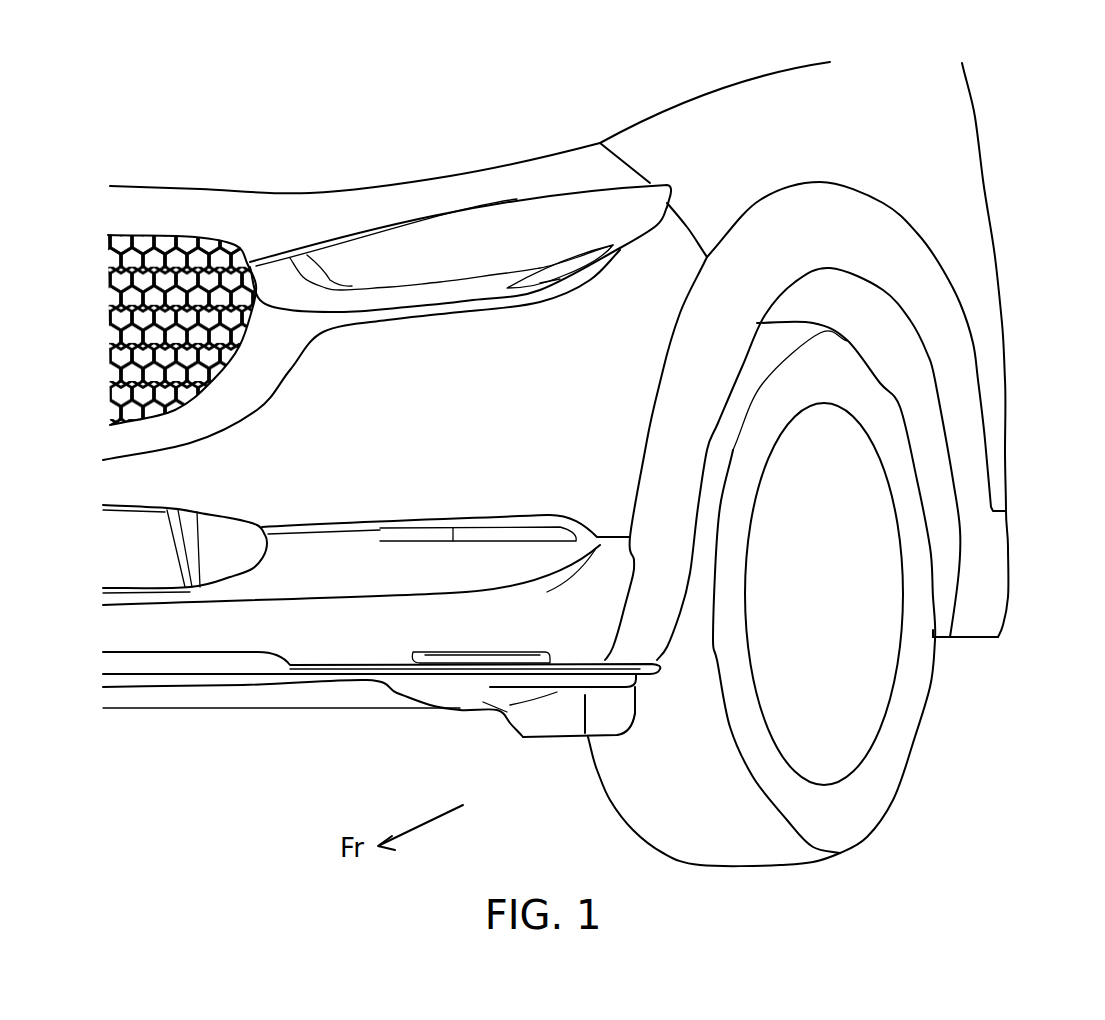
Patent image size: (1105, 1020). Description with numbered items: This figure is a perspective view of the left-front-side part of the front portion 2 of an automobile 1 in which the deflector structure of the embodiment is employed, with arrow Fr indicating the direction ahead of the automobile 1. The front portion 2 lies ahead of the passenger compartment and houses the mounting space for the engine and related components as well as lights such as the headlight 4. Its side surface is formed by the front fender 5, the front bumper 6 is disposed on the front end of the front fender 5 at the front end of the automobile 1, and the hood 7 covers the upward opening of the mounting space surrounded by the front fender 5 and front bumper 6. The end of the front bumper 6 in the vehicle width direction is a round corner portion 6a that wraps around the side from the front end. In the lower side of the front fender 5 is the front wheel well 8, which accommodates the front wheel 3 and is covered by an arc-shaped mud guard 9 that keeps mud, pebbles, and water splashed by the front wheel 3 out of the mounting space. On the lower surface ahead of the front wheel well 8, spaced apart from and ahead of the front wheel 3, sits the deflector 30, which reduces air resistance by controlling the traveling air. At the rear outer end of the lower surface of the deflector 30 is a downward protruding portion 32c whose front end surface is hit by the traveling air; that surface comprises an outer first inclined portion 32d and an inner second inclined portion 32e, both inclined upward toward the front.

The automobile 1 is at (140, 131).
The front portion 2 is at (898, 80).
The front wheel 3 is at (893, 757).
The headlight 4 is at (523, 227).
The front fender 5 is at (957, 127).
The front bumper 6 is at (325, 638).
The corner portion 6a is at (607, 610).
The hood 7 is at (605, 112).
The front wheel well 8 is at (900, 353).
The mud guard 9 is at (947, 577).
The deflector 30 is at (541, 747).
The protruding portion 32c is at (572, 740).
The first inclined portion 32d is at (605, 710).
The second inclined portion 32e is at (523, 735).